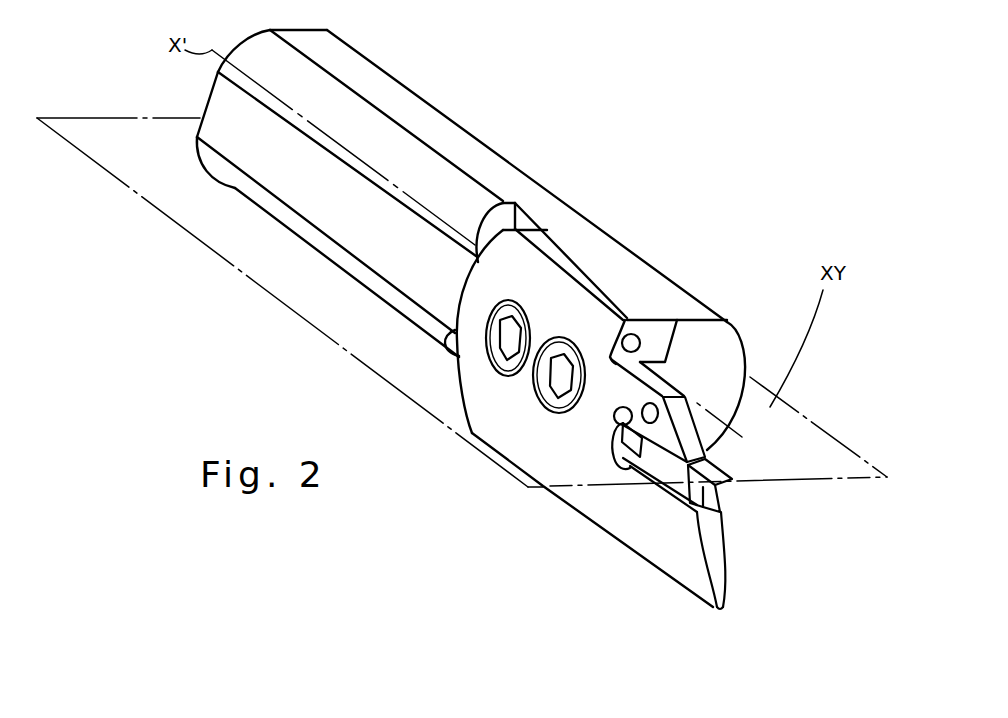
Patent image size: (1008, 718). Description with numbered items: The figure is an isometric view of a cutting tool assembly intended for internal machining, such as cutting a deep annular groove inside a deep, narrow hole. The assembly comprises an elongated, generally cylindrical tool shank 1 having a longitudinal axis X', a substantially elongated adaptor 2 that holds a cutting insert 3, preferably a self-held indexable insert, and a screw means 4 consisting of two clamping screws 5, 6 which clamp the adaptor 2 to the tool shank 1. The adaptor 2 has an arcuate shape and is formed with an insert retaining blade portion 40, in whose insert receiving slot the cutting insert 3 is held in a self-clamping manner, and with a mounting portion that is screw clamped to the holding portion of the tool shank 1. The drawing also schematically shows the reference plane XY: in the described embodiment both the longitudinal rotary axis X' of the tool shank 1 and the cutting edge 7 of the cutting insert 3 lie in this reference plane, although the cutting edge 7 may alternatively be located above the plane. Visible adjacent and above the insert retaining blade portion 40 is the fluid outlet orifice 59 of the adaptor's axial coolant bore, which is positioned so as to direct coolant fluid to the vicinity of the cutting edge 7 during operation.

The tool shank 1 is at (352, 47).
The adaptor 2 is at (506, 440).
The cutting insert 3 is at (717, 493).
The screw means 4 is at (475, 378).
The clamping screw 5 is at (563, 384).
The clamping screw 6 is at (511, 350).
The cutting edge 7 is at (723, 473).
The insert retaining blade portion 40 is at (637, 520).
The fluid outlet orifice 59 is at (636, 336).